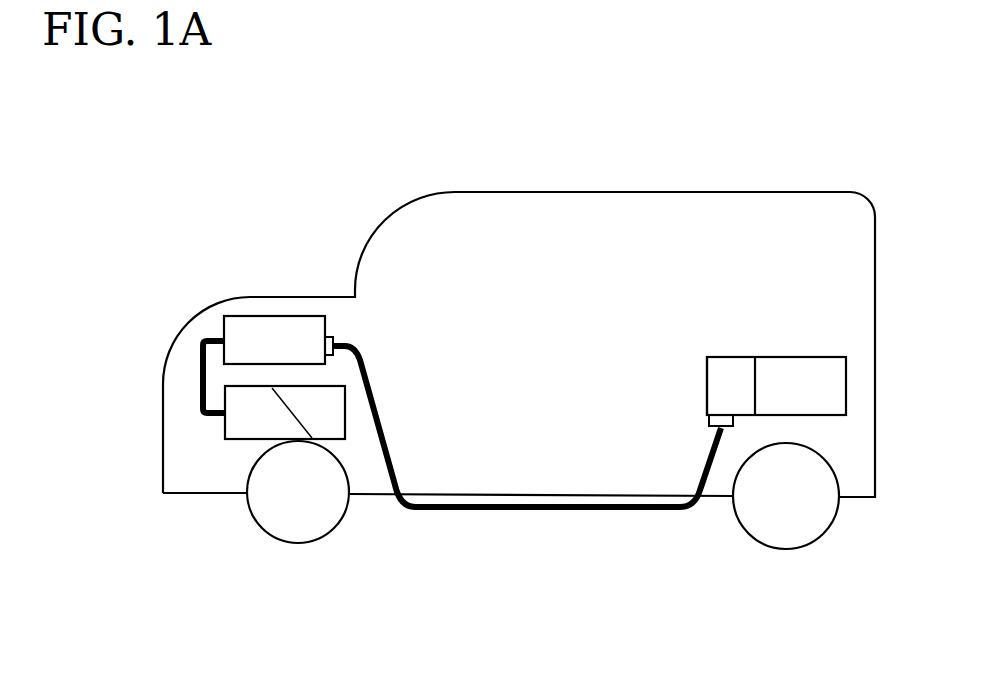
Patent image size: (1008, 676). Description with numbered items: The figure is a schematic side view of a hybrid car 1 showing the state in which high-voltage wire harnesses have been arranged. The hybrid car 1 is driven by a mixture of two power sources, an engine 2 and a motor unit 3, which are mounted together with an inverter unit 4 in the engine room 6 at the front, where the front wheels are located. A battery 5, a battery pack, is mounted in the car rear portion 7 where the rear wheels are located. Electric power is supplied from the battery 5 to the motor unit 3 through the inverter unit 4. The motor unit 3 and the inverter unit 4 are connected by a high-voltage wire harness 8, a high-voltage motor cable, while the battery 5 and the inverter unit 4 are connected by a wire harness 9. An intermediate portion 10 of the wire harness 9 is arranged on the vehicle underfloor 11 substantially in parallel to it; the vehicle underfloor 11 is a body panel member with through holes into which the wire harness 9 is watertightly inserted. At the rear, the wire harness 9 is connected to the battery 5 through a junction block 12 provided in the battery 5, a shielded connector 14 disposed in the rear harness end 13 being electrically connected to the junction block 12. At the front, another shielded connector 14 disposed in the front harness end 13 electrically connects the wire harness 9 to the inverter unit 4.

The hybrid car 1 is at (578, 190).
The engine 2 is at (330, 423).
The motor unit 3 is at (248, 425).
The inverter unit 4 is at (262, 328).
The battery 5 is at (810, 375).
The engine room 6 is at (182, 462).
The car rear portion 7 is at (850, 455).
The high-voltage wire harness 8 is at (203, 383).
The wire harness 9 is at (440, 508).
The intermediate portion 10 is at (565, 510).
The vehicle underfloor 11 is at (635, 498).
The junction block 12 is at (736, 375).
The harness end 13 is at (355, 345).
The shielded connector 14 is at (338, 336).